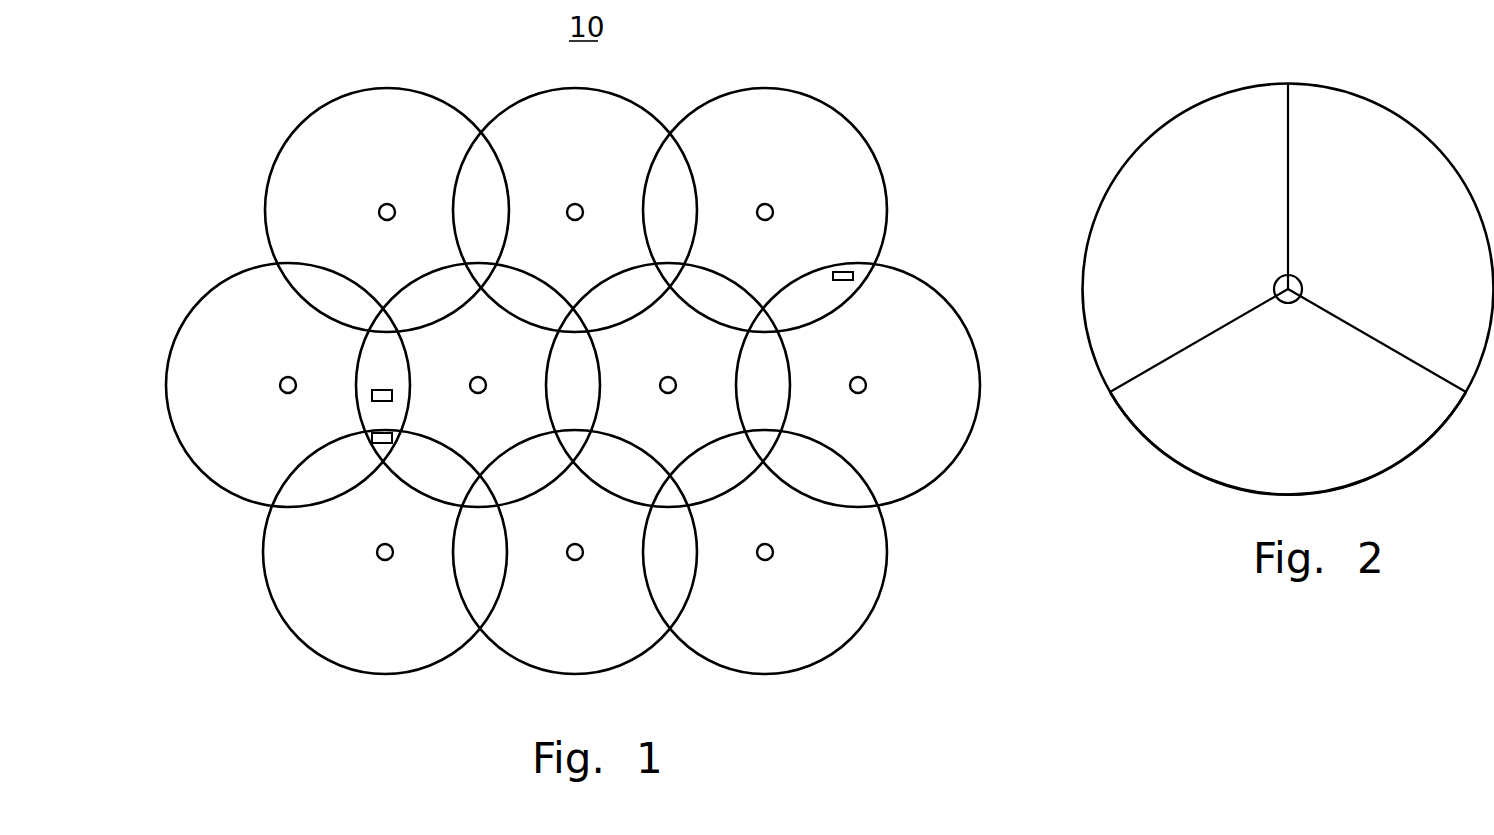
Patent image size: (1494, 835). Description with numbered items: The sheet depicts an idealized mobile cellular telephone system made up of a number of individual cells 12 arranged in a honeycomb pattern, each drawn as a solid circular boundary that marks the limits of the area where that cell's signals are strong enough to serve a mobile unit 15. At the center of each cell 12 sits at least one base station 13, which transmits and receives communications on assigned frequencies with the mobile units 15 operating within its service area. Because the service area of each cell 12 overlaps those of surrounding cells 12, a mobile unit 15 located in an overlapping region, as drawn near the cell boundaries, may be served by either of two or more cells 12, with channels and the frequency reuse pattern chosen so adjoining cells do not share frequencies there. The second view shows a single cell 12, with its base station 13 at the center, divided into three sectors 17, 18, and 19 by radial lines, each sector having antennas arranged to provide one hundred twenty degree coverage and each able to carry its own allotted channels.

In FIG. 1, the cell 12 is at (341, 112).
In FIG. 2, the cell 12 is at (1163, 148).
In FIG. 1, the base station 13 is at (380, 209).
In FIG. 2, the base station 13 is at (1281, 281).
In FIG. 1, the mobile unit 15 is at (392, 438).
In FIG. 2, the sector 17 is at (1199, 238).
In FIG. 2, the sector 18 is at (1288, 443).
In FIG. 2, the sector 19 is at (1378, 340).